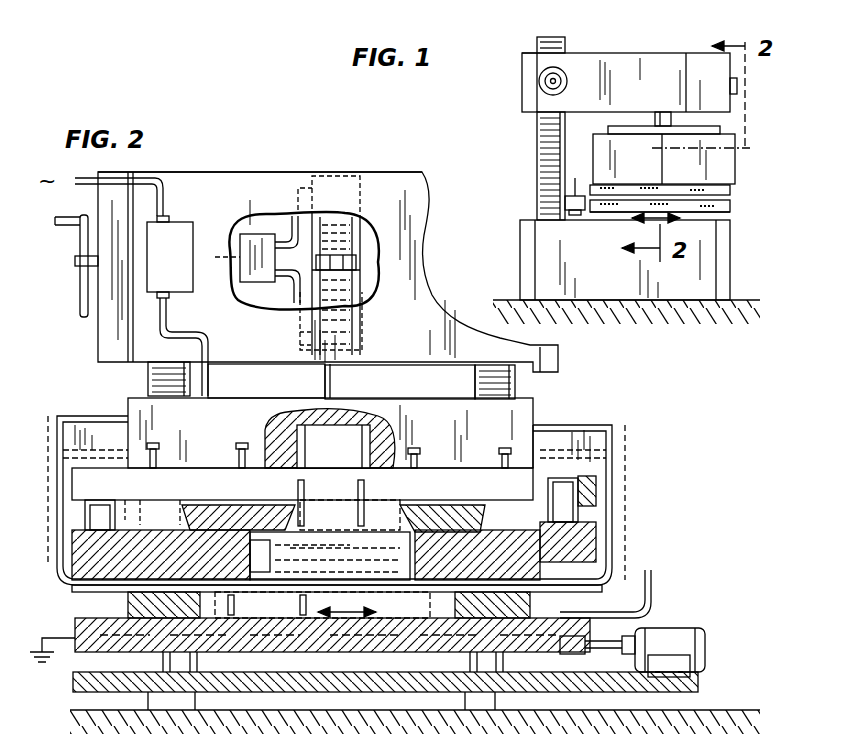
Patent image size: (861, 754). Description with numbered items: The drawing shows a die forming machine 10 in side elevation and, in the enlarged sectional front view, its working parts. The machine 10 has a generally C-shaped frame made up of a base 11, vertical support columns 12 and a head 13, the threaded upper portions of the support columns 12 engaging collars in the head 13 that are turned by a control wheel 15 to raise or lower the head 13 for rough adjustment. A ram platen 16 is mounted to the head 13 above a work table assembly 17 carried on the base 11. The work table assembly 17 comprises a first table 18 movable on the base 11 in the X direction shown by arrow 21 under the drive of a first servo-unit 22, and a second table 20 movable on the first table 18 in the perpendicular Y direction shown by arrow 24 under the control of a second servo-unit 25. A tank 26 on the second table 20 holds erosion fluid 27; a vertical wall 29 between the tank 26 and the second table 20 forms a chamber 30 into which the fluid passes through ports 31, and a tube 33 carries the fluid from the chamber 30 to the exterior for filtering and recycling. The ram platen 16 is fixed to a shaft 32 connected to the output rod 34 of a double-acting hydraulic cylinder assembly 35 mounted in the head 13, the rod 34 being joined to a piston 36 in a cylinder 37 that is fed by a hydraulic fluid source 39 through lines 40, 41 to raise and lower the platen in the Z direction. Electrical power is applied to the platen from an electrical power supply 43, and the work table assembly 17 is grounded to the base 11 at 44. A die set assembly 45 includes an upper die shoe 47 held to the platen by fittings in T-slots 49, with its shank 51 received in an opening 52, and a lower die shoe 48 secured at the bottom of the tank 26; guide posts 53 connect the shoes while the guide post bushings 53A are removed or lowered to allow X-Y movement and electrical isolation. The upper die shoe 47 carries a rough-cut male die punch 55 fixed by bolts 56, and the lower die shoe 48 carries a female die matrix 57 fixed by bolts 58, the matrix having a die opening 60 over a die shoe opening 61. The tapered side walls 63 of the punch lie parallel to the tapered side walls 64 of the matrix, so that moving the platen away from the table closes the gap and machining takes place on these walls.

In FIG. 1, the die forming machine 10 is at (516, 103).
In FIG. 2, the die forming machine 10 is at (436, 215).
In FIG. 1, the base 11 is at (548, 272).
In FIG. 2, the base 11 is at (197, 702).
In FIG. 1, the support columns 12 is at (537, 159).
In FIG. 2, the support columns 12 is at (148, 378).
In FIG. 1, the head 13 is at (524, 70).
In FIG. 1, the control wheel 15 is at (567, 81).
In FIG. 2, the control wheel 15 is at (80, 240).
In FIG. 1, the ram platen 16 is at (610, 130).
In FIG. 2, the ram platen 16 is at (528, 415).
In FIG. 1, the work table assembly 17 is at (736, 207).
In FIG. 2, the work table assembly 17 is at (68, 682).
In FIG. 1, the first table 18 is at (732, 214).
In FIG. 2, the first table 18 is at (150, 714).
In FIG. 1, the second table 20 is at (732, 190).
In FIG. 2, the second table 20 is at (78, 626).
In FIG. 1, the arrow 21 is at (656, 221).
In FIG. 1, the first servo-unit 22 is at (577, 182).
In FIG. 2, the arrow 24 is at (356, 620).
In FIG. 2, the second servo-unit 25 is at (674, 630).
In FIG. 1, the tank 26 is at (718, 160).
In FIG. 2, the tank 26 is at (614, 450).
In FIG. 2, the erosion fluid 27 is at (600, 566).
In FIG. 2, the vertical wall 29 is at (128, 606).
In FIG. 2, the chamber 30 is at (300, 640).
In FIG. 2, the ports 31 is at (310, 596).
In FIG. 2, the shaft 32 is at (328, 380).
In FIG. 2, the tube 33 is at (653, 600).
In FIG. 2, the output rod 34 is at (346, 306).
In FIG. 2, the double-acting hydraulic cylinder assembly 35 is at (372, 192).
In FIG. 2, the piston 36 is at (344, 257).
In FIG. 2, the cylinder 37 is at (362, 270).
In FIG. 2, the hydraulic fluid source 39 is at (258, 236).
In FIG. 2, the line 40 is at (294, 222).
In FIG. 2, the line 41 is at (297, 296).
In FIG. 2, the electrical power supply 43 is at (180, 266).
In FIG. 2, the ground 44 is at (43, 642).
In FIG. 2, the die set assembly 45 is at (600, 511).
In FIG. 2, the upper die shoe 47 is at (160, 466).
In FIG. 2, the lower die shoe 48 is at (598, 540).
In FIG. 2, the T-slots 49 is at (246, 448).
In FIG. 2, the shank 51 is at (374, 408).
In FIG. 2, the opening 52 is at (340, 447).
In FIG. 2, the guide posts 53 is at (104, 508).
In FIG. 2, the guide post bushings 53A is at (306, 555).
In FIG. 2, the male die punch 55 is at (366, 498).
In FIG. 2, the bolts 56 is at (336, 490).
In FIG. 2, the female die matrix 57 is at (198, 506).
In FIG. 2, the bolts 58 is at (330, 556).
In FIG. 2, the die opening 60 is at (312, 549).
In FIG. 2, the die shoe opening 61 is at (337, 560).
In FIG. 2, the tapered side walls 63 is at (396, 502).
In FIG. 2, the tapered side walls 64 is at (278, 506).